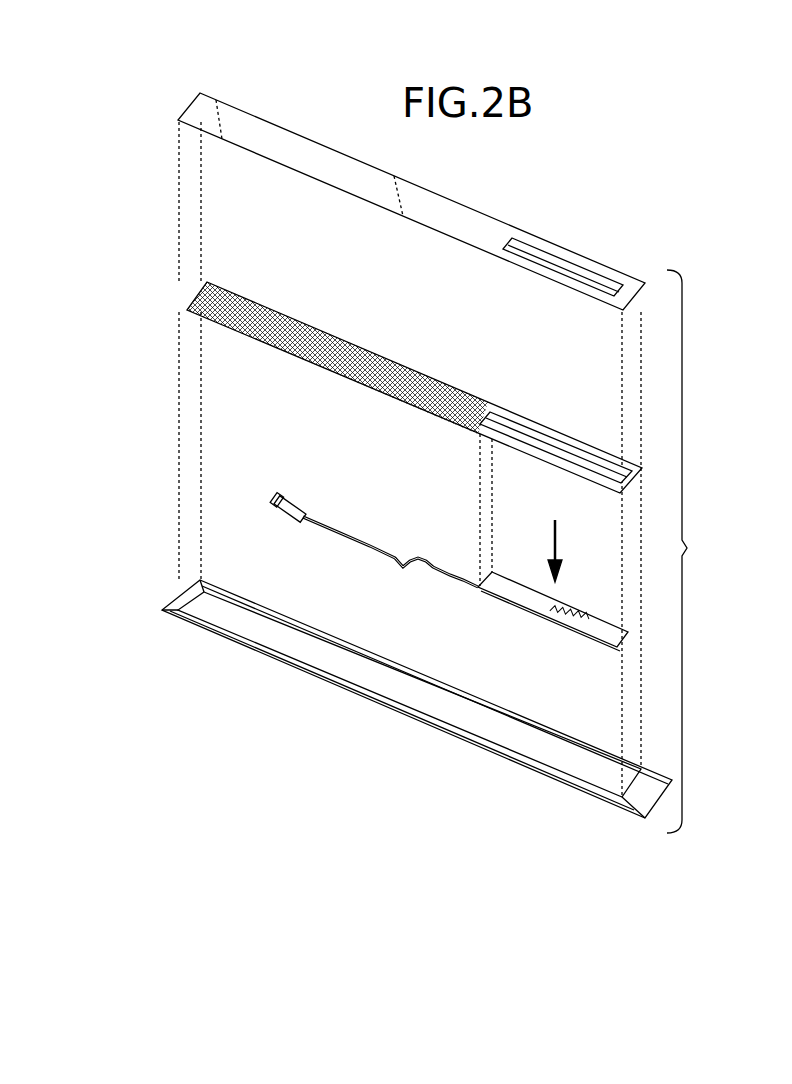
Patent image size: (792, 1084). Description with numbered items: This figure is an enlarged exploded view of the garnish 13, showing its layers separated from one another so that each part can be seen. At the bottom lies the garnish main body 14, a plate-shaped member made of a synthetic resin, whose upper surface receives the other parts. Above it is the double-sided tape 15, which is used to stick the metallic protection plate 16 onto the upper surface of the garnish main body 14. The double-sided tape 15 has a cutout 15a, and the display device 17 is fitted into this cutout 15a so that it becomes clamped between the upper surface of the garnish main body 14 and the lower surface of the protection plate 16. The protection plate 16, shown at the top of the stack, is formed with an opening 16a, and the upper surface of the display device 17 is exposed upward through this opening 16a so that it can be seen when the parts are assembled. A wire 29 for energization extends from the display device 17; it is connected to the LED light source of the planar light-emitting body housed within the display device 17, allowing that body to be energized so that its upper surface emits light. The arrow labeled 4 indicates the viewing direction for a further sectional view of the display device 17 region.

The garnish 13 is at (448, 466).
The garnish main body 14 is at (434, 705).
The double-sided tape 15 is at (345, 338).
The cutout 15a is at (550, 440).
The protection plate 16 is at (455, 203).
The opening 16a is at (593, 276).
The display device 17 is at (536, 614).
The wire 29 is at (360, 552).
The viewing direction of FIG. 4 is at (555, 536).